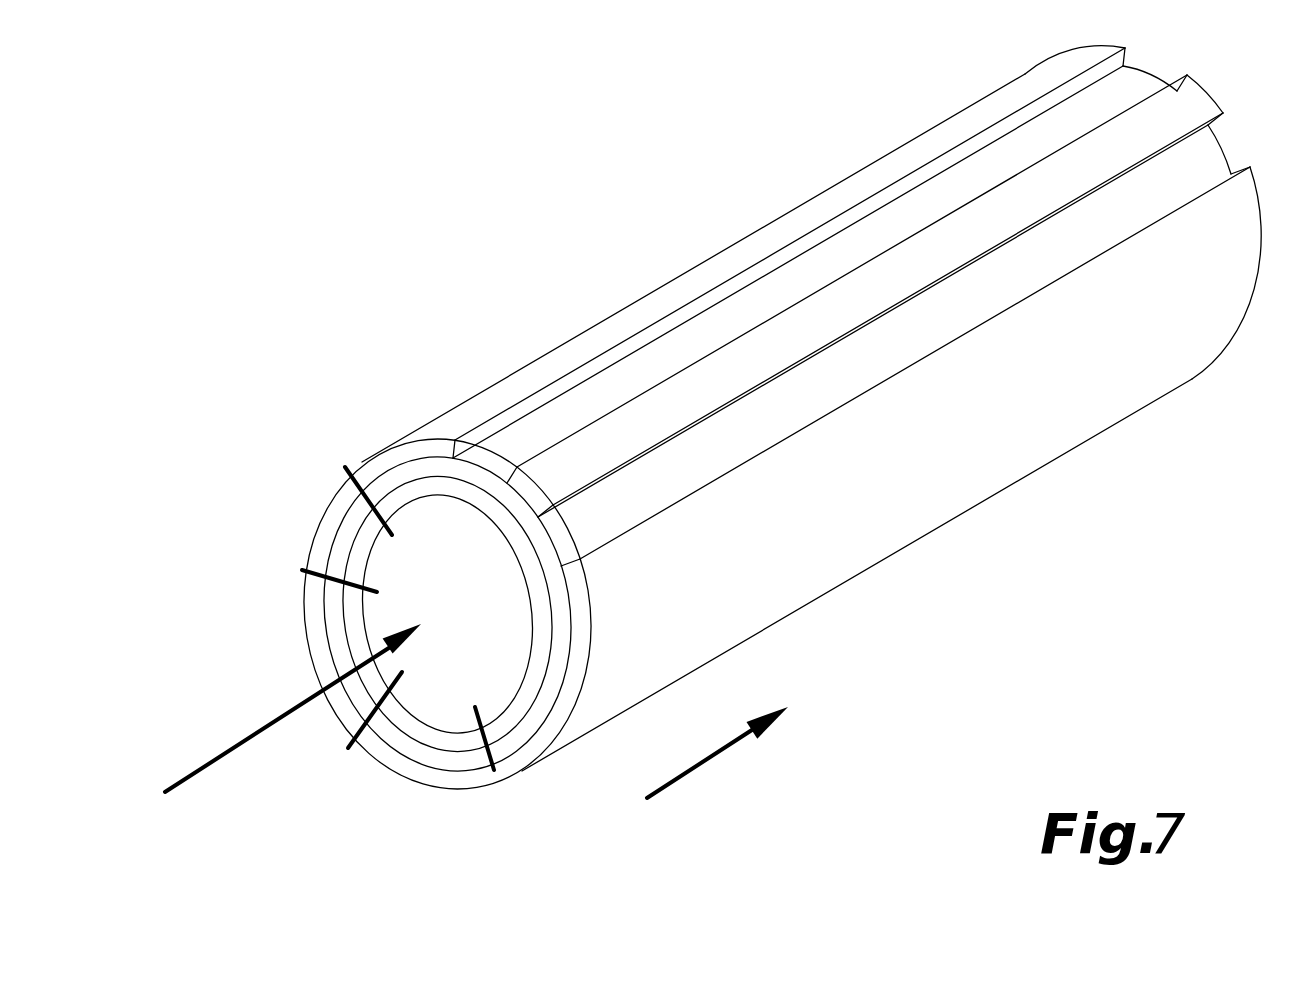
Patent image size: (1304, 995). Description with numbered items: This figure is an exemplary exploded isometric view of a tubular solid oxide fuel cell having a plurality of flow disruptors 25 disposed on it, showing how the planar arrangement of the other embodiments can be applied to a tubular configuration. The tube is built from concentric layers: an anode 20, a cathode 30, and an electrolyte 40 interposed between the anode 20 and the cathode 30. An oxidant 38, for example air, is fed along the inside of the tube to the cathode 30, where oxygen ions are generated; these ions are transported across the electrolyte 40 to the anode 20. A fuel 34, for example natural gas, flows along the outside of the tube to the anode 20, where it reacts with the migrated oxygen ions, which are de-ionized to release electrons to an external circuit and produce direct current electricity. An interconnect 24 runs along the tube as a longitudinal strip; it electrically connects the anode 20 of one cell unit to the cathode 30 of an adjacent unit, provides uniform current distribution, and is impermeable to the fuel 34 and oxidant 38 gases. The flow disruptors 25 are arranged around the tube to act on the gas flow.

The anode 20 is at (524, 777).
The interconnect 24 is at (1085, 177).
The flow disruptors 25 is at (291, 556).
The cathode 30 is at (380, 483).
The fuel 34 is at (704, 752).
The oxidant 38 is at (284, 708).
The electrolyte 40 is at (523, 428).